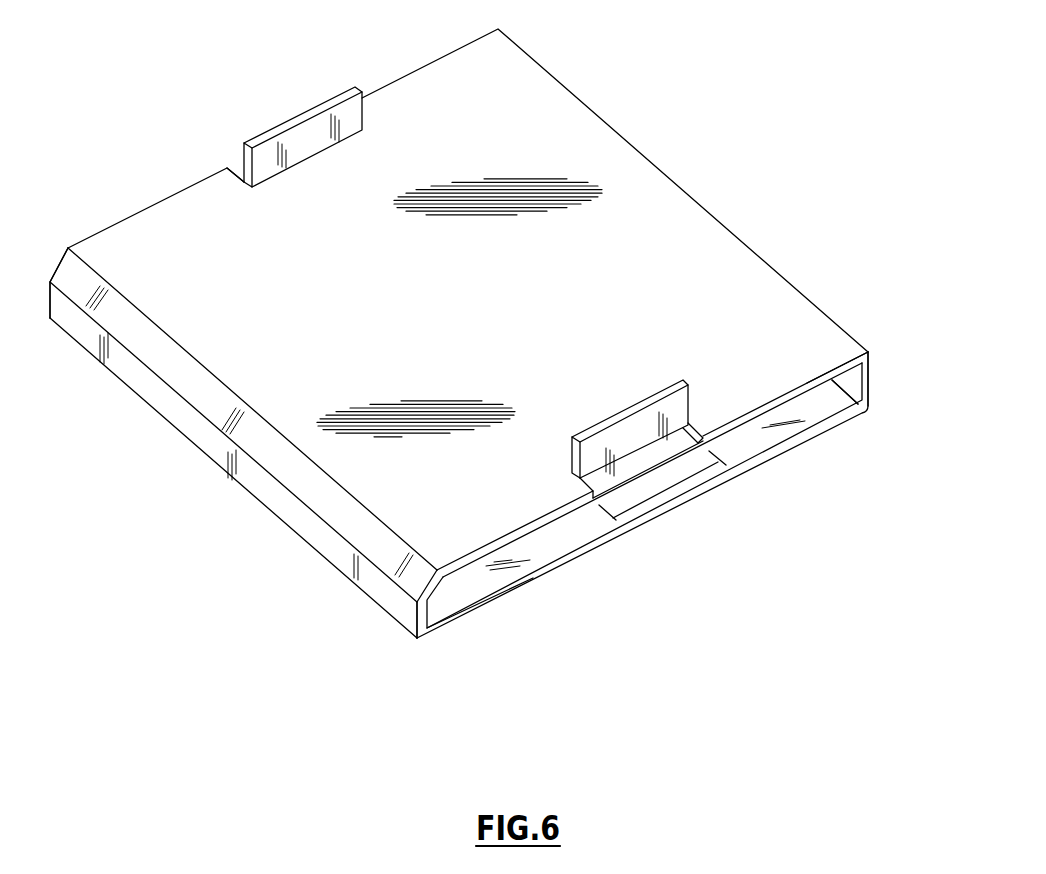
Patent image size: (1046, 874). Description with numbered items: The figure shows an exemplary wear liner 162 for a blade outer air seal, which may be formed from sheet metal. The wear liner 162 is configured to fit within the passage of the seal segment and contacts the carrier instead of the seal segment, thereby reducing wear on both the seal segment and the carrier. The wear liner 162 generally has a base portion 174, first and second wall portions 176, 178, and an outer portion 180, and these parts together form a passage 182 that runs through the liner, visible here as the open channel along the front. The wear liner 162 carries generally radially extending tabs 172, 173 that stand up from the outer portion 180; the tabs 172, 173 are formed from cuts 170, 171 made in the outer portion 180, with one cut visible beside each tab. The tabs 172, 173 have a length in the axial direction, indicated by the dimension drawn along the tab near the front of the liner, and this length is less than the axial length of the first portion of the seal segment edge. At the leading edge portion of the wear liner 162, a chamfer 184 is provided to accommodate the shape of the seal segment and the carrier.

The wear liner 162 is at (675, 178).
The cut 170 is at (698, 424).
The cut 171 is at (233, 166).
The tab 172 is at (628, 431).
The tab 173 is at (313, 107).
The base portion 174 is at (533, 578).
The first wall portion 176 is at (395, 600).
The second wall portion 178 is at (869, 382).
The outer portion 180 is at (807, 382).
The passage 182 is at (833, 402).
The chamfer 184 is at (50, 282).